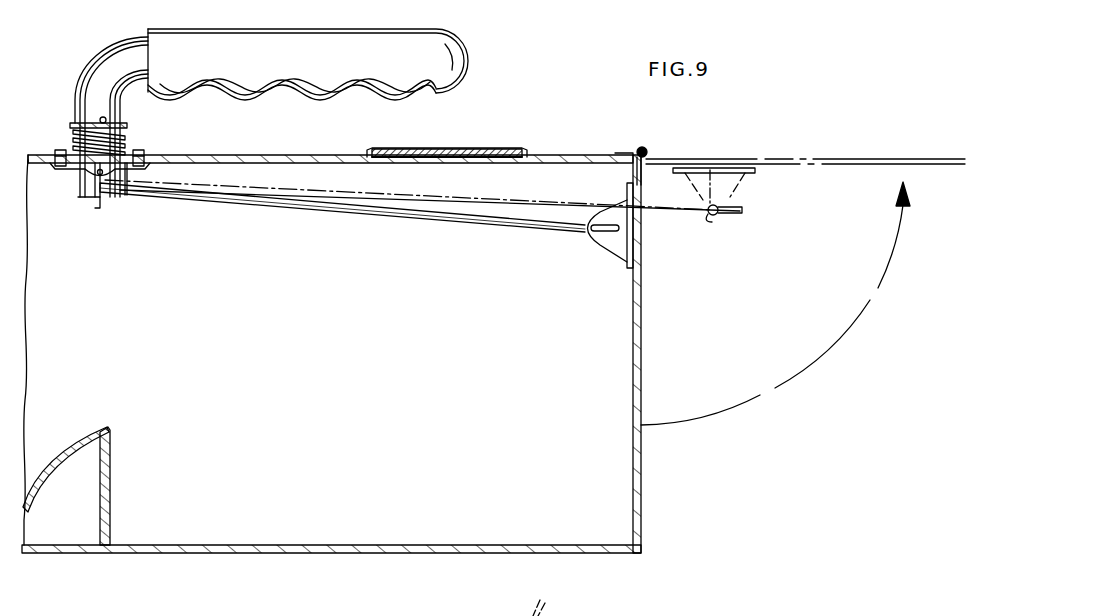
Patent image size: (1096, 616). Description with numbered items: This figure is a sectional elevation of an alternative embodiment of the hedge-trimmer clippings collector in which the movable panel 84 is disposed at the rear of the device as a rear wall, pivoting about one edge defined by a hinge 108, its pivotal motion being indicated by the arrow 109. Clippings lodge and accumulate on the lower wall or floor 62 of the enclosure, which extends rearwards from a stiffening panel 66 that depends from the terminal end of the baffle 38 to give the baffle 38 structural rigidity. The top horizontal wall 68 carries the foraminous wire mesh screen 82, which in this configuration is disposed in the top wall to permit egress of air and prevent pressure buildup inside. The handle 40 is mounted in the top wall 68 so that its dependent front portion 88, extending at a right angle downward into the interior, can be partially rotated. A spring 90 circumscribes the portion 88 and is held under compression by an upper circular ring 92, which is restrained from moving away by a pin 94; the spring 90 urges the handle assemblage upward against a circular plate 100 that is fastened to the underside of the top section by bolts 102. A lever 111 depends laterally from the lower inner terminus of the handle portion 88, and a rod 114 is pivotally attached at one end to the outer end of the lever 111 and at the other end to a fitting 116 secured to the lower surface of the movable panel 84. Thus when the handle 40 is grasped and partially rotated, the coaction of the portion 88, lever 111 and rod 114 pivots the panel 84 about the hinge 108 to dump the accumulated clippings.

The baffle 38 is at (82, 448).
The handle 40 is at (456, 46).
The lower wall or floor 62 is at (298, 554).
The stiffening panel 66 is at (112, 473).
The upper container portion (top horizontal wall) 68 is at (585, 155).
The wire mesh screen 82 is at (490, 152).
The movable panel 84 is at (836, 160).
The dependent front portion of handle 88 is at (80, 97).
The spring 90 is at (75, 132).
The upper circular ring 92 is at (73, 124).
The pin 94 is at (106, 118).
The circular plate 100 is at (122, 167).
The bolts 102 is at (142, 156).
The hinge 108 is at (650, 151).
The arrow 109 is at (802, 366).
The lever 111 is at (112, 190).
The rod 114 is at (410, 226).
The fitting 116 is at (612, 247).